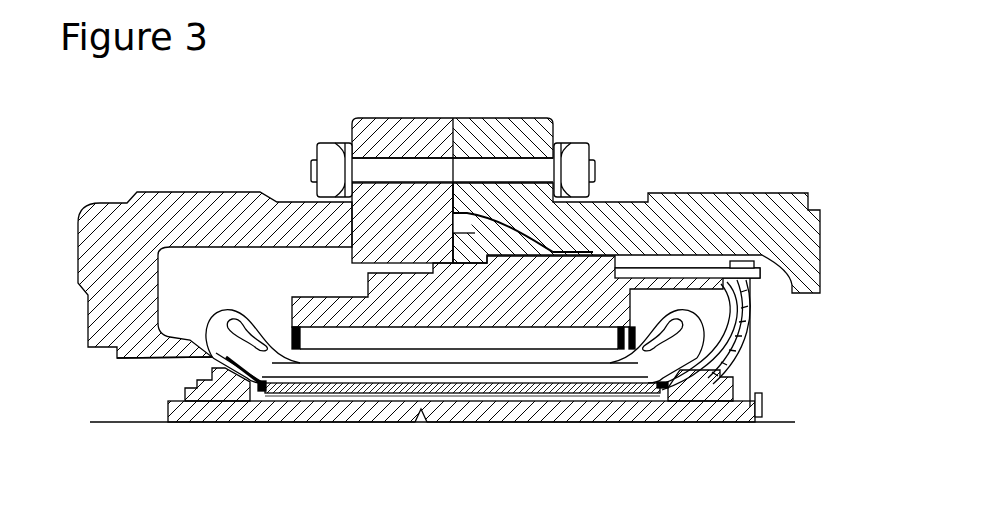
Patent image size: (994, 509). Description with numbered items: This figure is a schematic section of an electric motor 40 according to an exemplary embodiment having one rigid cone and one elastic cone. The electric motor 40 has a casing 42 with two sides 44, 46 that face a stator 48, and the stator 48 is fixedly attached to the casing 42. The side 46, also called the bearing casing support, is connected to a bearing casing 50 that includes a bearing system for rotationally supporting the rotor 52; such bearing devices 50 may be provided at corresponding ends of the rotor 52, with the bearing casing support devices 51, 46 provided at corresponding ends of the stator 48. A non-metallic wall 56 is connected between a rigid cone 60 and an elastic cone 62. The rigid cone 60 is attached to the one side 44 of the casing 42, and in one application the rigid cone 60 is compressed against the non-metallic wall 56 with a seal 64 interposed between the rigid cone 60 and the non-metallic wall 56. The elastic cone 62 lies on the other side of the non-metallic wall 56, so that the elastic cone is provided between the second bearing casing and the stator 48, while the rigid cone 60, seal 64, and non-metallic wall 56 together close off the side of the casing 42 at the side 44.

The electric motor 40 is at (149, 98).
The casing 42 is at (220, 212).
The side 44 is at (128, 305).
The side 46 is at (743, 322).
The stator 48 is at (528, 363).
The bearing casing 50 is at (205, 390).
The bearing casing support device 51 is at (120, 357).
The rotor 52 is at (627, 413).
The non-metallic wall 56 is at (583, 392).
The rigid cone 60 is at (250, 377).
The elastic cone 62 is at (723, 340).
The seal 64 is at (265, 388).